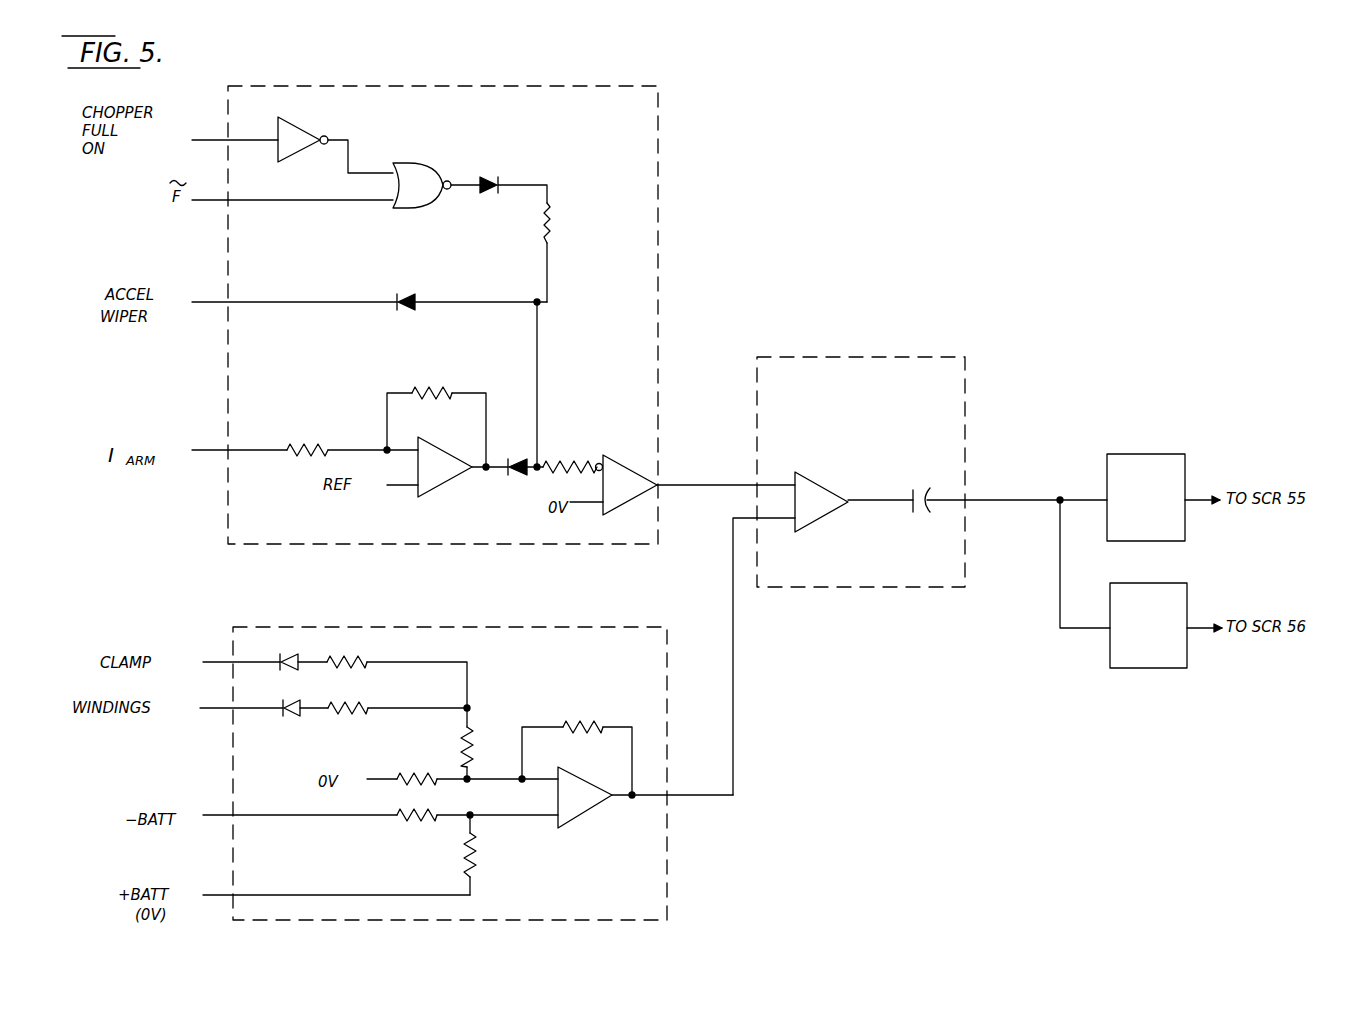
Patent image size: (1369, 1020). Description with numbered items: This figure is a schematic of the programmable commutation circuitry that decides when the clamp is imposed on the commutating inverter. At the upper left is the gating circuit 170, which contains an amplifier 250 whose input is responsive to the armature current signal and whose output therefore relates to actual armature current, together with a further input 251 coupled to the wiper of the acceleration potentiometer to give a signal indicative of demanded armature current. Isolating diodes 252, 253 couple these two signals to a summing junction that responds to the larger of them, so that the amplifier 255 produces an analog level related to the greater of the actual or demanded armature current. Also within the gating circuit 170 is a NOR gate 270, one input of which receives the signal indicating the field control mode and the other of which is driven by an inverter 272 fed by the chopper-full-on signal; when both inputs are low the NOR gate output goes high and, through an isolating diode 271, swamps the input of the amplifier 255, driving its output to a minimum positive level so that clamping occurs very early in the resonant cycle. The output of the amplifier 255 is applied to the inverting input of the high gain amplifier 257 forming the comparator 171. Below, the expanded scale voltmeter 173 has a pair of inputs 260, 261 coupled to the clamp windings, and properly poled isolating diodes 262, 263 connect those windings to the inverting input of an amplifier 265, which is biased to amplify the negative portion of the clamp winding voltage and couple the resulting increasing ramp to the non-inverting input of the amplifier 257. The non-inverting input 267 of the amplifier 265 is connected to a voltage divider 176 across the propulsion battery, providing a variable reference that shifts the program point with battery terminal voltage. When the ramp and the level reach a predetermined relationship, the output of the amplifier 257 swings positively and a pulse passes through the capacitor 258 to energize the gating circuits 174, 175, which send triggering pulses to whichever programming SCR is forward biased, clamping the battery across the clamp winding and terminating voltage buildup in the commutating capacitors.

The gating circuit 170 is at (660, 133).
The comparator 171 is at (885, 356).
The expanded scale voltmeter 173 is at (667, 880).
The gating circuit 174 is at (1147, 454).
The gating circuit 175 is at (1125, 668).
The voltage divider 176 is at (465, 855).
The amplifier 250 is at (430, 497).
The input 251 is at (264, 304).
The isolating diode 252 is at (512, 476).
The isolating diode 253 is at (403, 296).
The amplifier 255 is at (625, 466).
The high gain amplifier 257 is at (832, 487).
The capacitor 258 is at (917, 515).
The input 260 is at (210, 648).
The input 261 is at (200, 708).
The isolating diode 262 is at (292, 652).
The isolating diode 263 is at (298, 722).
The amplifier 265 is at (575, 828).
The non-inverting input 267 is at (203, 818).
The NOR gate 270 is at (412, 169).
The isolating diode 271 is at (492, 178).
The inverter 272 is at (308, 121).